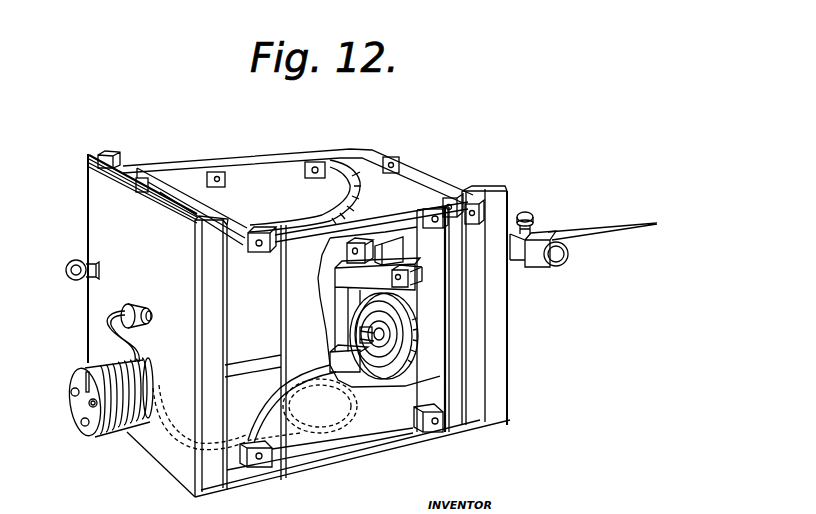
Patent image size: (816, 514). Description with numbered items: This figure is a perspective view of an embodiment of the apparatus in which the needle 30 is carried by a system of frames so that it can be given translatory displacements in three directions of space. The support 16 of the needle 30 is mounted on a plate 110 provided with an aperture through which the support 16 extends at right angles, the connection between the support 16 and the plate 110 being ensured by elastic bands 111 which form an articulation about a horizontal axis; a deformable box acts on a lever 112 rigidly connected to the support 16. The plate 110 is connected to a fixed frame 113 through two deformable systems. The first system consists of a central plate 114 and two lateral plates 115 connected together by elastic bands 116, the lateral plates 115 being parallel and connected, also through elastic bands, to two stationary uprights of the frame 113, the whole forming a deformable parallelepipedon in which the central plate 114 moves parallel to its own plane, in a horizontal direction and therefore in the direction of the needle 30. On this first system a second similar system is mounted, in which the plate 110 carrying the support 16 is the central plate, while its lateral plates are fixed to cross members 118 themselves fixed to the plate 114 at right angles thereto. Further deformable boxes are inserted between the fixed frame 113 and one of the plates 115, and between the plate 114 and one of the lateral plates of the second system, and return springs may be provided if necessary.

The fixed frame 113 is at (102, 204).
The lateral plates 115 is at (197, 222).
The central plate 114 is at (270, 155).
The cross members 118 is at (249, 442).
The elastic bands 116 is at (416, 424).
The support 16 is at (388, 262).
The needle 30 is at (594, 224).
The elastic bands 111 is at (425, 297).
The lever 112 is at (363, 312).
The plate 110 is at (433, 338).